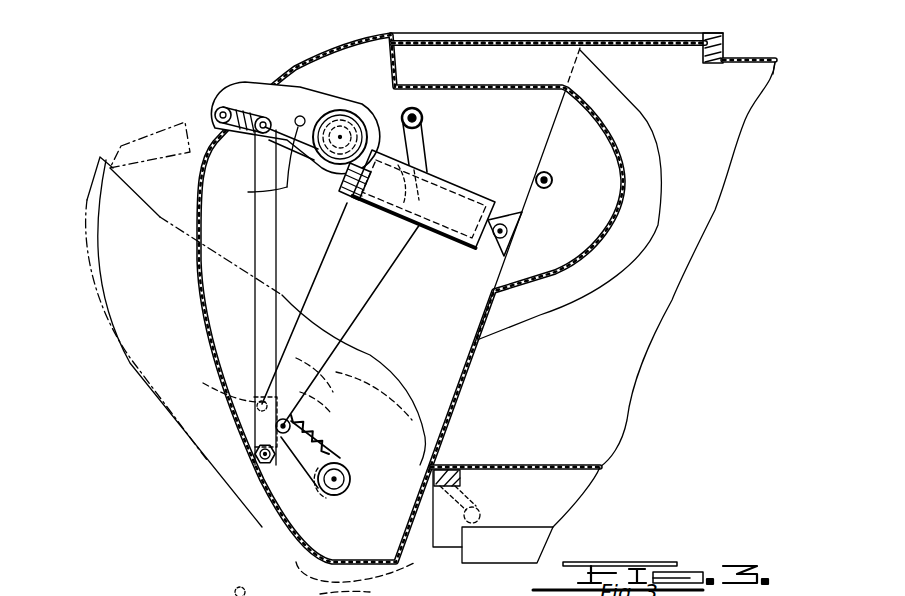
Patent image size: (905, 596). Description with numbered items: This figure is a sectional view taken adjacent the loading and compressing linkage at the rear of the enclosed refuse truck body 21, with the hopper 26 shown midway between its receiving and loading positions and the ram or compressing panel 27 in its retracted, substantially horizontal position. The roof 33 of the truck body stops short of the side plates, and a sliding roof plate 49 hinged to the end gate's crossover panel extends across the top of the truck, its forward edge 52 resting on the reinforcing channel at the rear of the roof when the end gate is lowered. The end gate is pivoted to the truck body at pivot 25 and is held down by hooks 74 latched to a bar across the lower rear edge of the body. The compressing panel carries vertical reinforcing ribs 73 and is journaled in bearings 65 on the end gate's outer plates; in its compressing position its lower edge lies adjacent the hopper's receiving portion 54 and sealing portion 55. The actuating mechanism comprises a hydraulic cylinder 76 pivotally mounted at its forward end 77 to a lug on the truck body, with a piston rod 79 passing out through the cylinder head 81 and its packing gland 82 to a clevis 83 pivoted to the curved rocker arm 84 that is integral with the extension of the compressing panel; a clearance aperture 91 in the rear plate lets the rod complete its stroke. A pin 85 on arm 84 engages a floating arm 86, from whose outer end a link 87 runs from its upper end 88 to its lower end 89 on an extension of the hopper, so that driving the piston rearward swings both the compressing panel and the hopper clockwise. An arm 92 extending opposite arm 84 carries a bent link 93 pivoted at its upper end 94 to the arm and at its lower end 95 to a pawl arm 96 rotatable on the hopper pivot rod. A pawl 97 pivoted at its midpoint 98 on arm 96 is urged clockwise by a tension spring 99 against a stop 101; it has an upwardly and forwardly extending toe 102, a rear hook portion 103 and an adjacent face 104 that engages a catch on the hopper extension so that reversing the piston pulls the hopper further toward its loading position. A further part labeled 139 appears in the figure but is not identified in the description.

The truck body 21 is at (650, 340).
The pivot 25 is at (554, 180).
The hopper 26 is at (125, 372).
The compressing panel 27 is at (143, 129).
The roof 33 is at (740, 63).
The sliding roof plate 49 is at (497, 46).
The forward edge of roof plate 52 is at (724, 39).
The receiving portion 54 is at (703, 59).
The sealing portion 55 is at (351, 478).
The bearings 65 is at (547, 465).
The reinforcing ribs 73 is at (424, 137).
The hooks 74 is at (467, 498).
The hydraulic cylinder 76 is at (455, 182).
The forward end of cylinder 77 is at (510, 231).
The piston rod 79 is at (257, 167).
The cylinder head 81 is at (330, 200).
The packing gland 82 is at (340, 180).
The clevis 83 is at (214, 109).
The rocker arm 84 is at (236, 84).
The pin 85 is at (301, 116).
The floating arm 86 is at (280, 103).
The link 87 is at (278, 262).
The upper end of link 88 is at (232, 136).
The lower end of link 89 is at (250, 464).
The clearance aperture 91 is at (208, 160).
The arm 92 is at (382, 82).
The link 93 is at (382, 261).
The upper end of link 94 is at (423, 114).
The lower end of link 95 is at (222, 388).
The pawl arm 96 is at (338, 456).
The pawl 97 is at (300, 404).
The midpoint pivot 98 is at (302, 417).
The tension spring 99 is at (328, 437).
The stop 101 is at (255, 401).
The toe 102 is at (308, 388).
The hook portion 103 is at (271, 475).
The pawl face 104 is at (257, 463).
The lower seal 139 is at (417, 588).